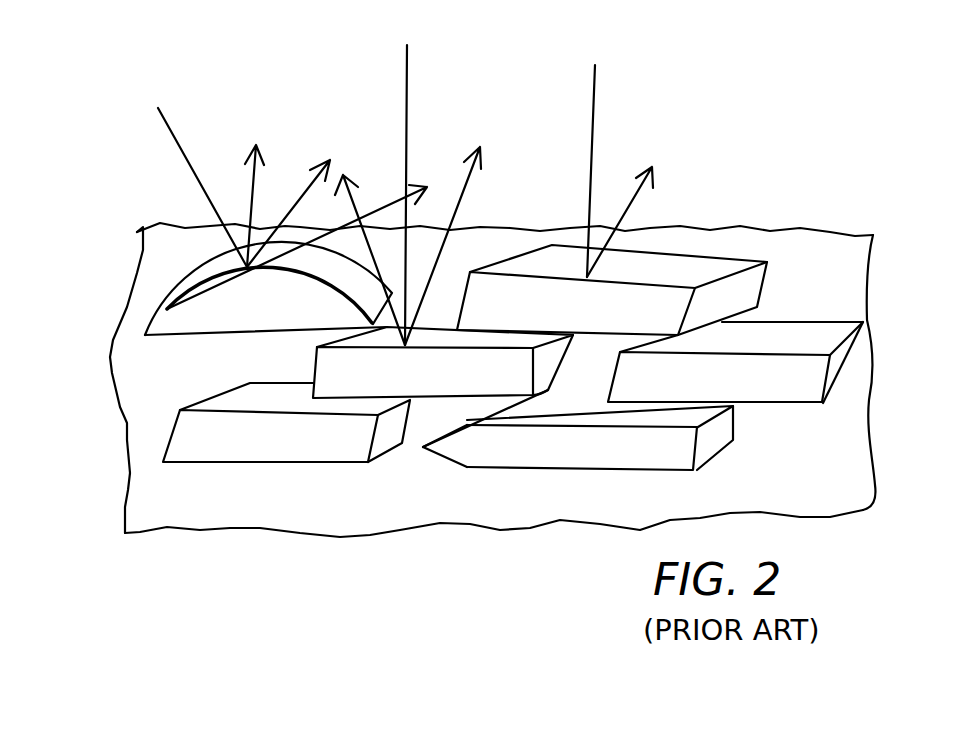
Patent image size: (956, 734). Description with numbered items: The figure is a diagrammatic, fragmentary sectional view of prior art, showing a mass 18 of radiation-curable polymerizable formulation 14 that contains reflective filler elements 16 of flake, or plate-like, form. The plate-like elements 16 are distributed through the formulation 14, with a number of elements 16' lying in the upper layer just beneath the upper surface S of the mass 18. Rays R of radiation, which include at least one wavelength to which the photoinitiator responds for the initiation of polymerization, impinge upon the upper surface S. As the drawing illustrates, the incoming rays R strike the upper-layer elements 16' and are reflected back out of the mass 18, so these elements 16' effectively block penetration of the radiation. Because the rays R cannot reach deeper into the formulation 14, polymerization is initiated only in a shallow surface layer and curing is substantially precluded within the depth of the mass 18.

The radiation-curable polymerizable formulation 14 is at (267, 500).
The reflective filler elements 16 is at (489, 448).
The elements of the upper layer 16' is at (470, 338).
The mass of polymerizable formulation 18 is at (112, 433).
The rays of radiation R is at (400, 179).
The upper surface S is at (813, 240).